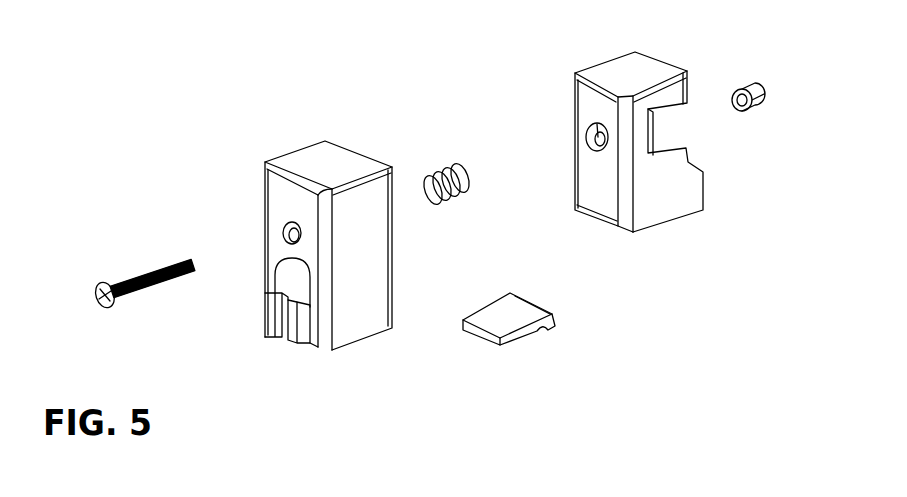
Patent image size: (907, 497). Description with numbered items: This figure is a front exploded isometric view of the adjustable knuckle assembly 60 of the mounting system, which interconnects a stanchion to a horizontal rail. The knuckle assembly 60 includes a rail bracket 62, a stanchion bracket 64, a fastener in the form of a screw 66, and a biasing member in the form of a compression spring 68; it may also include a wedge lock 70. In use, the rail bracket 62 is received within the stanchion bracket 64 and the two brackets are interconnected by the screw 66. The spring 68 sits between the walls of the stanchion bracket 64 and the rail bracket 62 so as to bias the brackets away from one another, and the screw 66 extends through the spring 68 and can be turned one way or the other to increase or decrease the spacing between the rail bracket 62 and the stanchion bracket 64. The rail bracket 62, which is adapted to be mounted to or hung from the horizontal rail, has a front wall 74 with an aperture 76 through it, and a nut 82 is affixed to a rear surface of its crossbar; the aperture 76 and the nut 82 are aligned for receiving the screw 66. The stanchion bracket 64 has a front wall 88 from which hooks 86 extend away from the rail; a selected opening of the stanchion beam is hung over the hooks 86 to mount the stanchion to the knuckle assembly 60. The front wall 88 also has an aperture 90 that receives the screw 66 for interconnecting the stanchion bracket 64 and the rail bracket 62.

The knuckle assembly 60 is at (359, 70).
The rail bracket 62 is at (658, 63).
The stanchion bracket 64 is at (300, 148).
The screw 66 is at (100, 286).
The compression spring 68 is at (437, 167).
The wedge lock 70 is at (527, 328).
The front wall 74 is at (597, 197).
The aperture 76 is at (585, 133).
The nut 82 is at (748, 110).
The hooks 86 is at (288, 334).
The front wall 88 is at (280, 198).
The aperture 90 is at (283, 233).